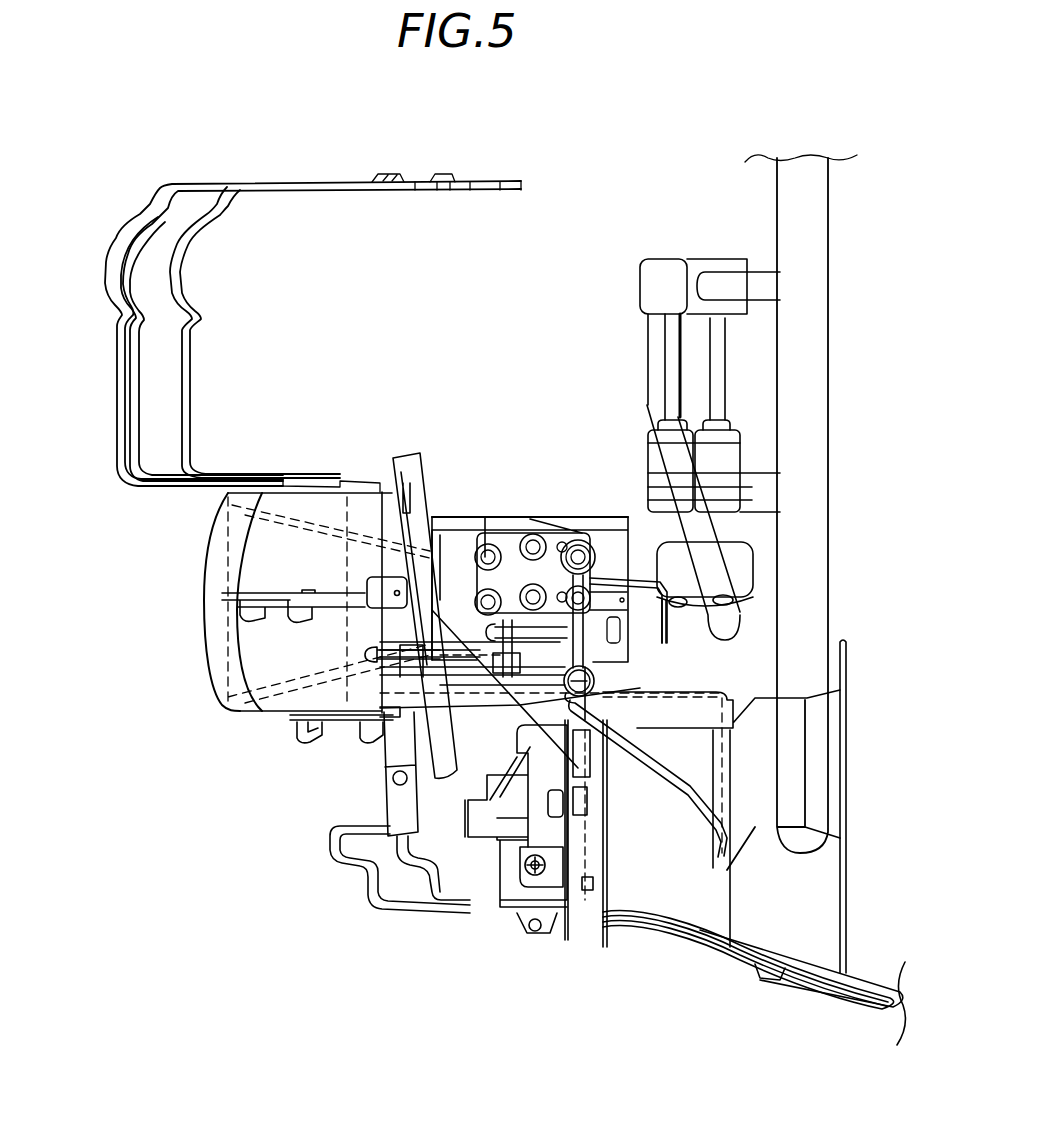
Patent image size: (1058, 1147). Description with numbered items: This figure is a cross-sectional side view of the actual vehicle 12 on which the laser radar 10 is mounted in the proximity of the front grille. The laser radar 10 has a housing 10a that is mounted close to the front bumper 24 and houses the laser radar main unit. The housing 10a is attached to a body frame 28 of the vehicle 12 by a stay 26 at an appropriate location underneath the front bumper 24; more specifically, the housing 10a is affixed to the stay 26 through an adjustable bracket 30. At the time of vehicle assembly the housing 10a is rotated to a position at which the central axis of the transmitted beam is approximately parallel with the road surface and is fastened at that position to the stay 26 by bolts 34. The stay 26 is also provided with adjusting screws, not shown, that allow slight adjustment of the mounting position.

The laser radar 10 is at (549, 530).
The housing 10a is at (450, 555).
The vehicle 12 is at (302, 160).
The front bumper 24 is at (106, 406).
The stay 26 is at (638, 705).
The body frame 28 is at (756, 812).
The adjustable bracket 30 is at (606, 684).
The bolts 34 is at (516, 575).